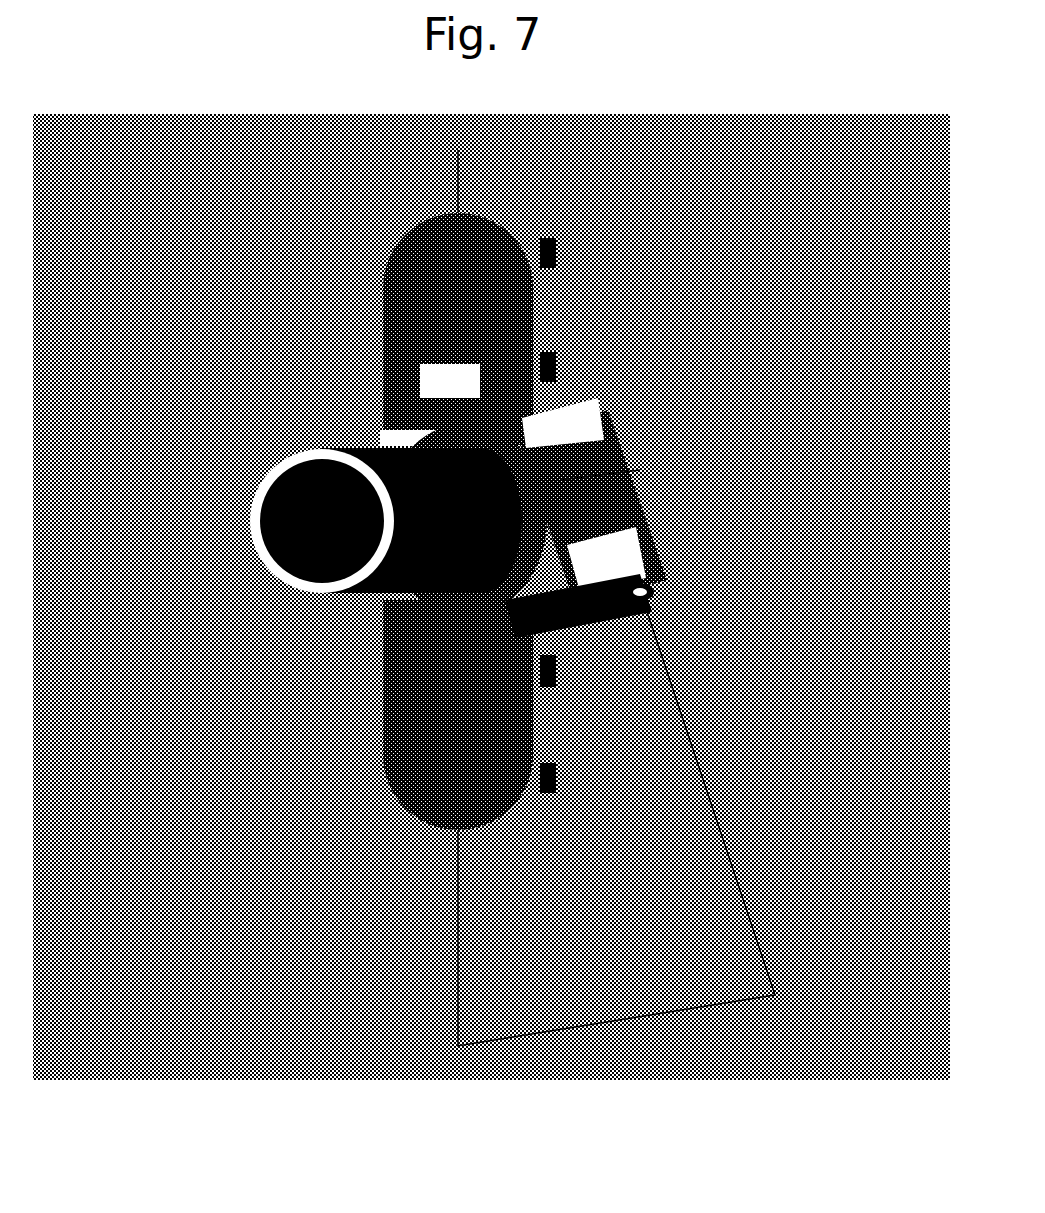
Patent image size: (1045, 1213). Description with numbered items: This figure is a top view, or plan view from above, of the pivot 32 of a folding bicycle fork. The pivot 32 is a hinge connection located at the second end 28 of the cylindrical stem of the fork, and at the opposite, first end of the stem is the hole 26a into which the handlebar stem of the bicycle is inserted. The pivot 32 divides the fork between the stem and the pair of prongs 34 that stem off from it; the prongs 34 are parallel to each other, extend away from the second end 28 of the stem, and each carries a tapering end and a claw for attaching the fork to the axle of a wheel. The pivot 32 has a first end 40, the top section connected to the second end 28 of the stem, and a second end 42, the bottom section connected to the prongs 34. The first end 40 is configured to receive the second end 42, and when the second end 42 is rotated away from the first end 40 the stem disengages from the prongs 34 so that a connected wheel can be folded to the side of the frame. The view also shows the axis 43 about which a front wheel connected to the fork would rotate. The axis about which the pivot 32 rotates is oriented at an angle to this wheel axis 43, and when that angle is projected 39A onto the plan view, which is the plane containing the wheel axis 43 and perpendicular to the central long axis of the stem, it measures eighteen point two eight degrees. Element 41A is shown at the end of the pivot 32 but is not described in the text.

The hole 26a is at (318, 512).
The second end of the stem 28 is at (497, 455).
The pivot 32 is at (567, 480).
The prongs 34 is at (487, 250).
The projected angle 39A is at (775, 995).
The first end of the pivot 40 is at (600, 622).
The bracket end bore 41A is at (642, 597).
The second end of the pivot 42 is at (555, 420).
The axis of the front wheel 43 is at (455, 893).